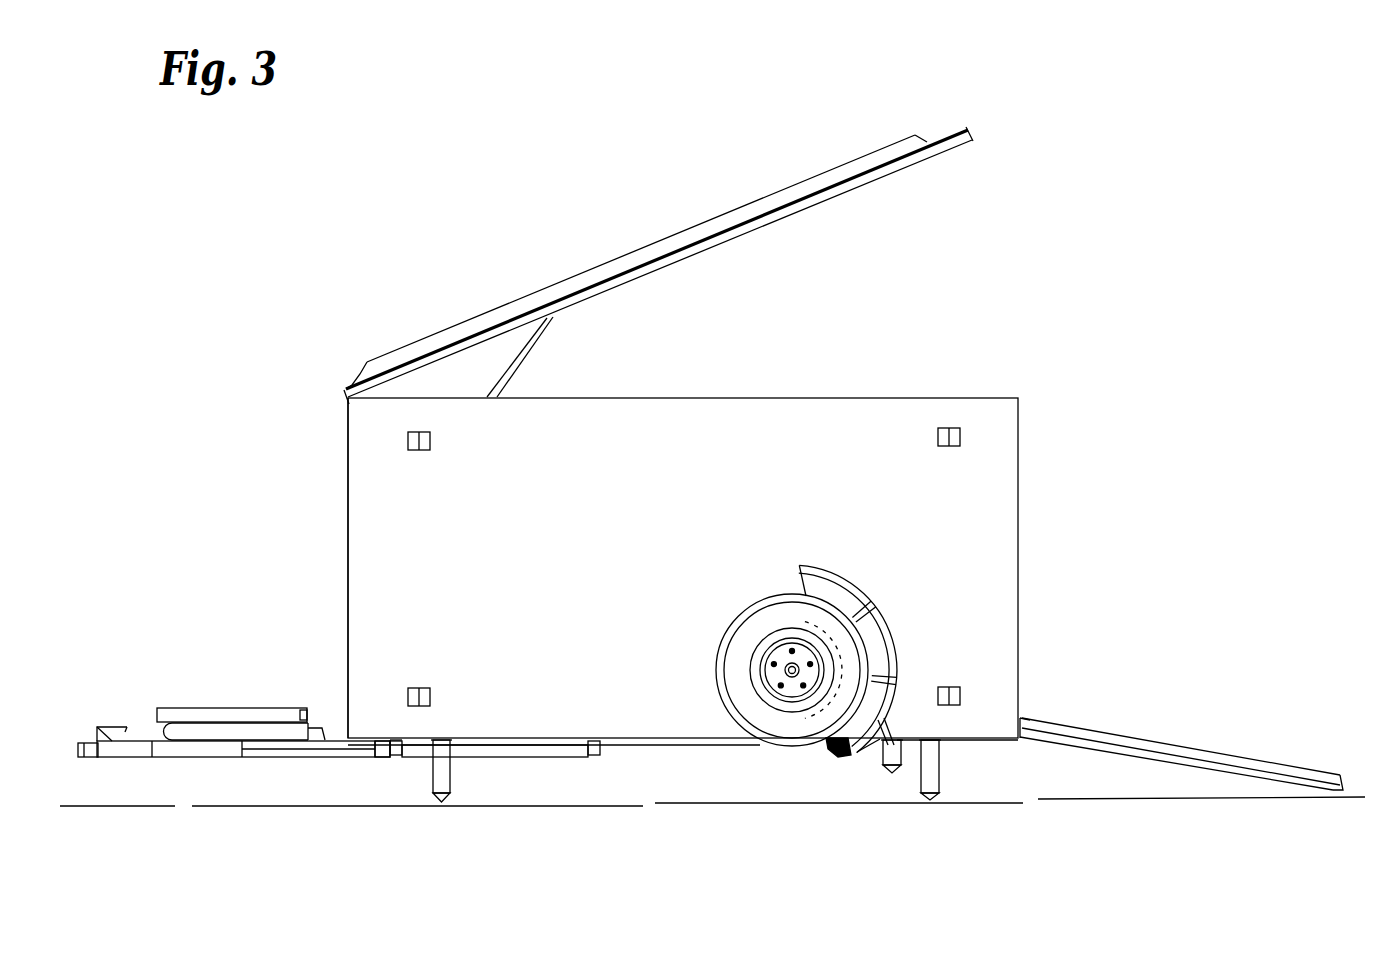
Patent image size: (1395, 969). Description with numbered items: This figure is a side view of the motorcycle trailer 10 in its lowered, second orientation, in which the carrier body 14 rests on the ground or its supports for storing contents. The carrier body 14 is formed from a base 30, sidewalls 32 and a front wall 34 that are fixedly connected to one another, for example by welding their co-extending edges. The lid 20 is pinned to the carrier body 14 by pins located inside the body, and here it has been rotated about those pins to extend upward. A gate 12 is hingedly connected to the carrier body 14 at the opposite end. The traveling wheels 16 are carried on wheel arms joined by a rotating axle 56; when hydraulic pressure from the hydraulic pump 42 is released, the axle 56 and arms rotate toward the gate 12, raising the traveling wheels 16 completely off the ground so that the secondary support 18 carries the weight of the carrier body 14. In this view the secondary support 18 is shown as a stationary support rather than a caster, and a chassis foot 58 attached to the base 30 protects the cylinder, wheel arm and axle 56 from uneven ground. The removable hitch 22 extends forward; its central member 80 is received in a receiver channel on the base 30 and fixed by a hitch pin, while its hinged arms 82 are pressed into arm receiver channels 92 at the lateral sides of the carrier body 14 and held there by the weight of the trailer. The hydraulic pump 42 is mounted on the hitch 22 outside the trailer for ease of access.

The motorcycle trailer 10 is at (545, 169).
The gate 12 is at (1250, 706).
The carrier body 14 is at (1078, 431).
The traveling wheels 16 is at (774, 742).
The secondary support 18 is at (426, 812).
The lid 20 is at (1032, 120).
The hitch 22 is at (243, 789).
The base 30 is at (568, 774).
The sidewalls 32 is at (575, 579).
The front wall 34 is at (291, 497).
The hydraulic pump 42 is at (231, 708).
The rotating axle 56 is at (840, 750).
The chassis foot 58 is at (892, 774).
The central member 80 is at (190, 753).
The arms 82 is at (317, 751).
The arm receiver channels 92 is at (378, 752).